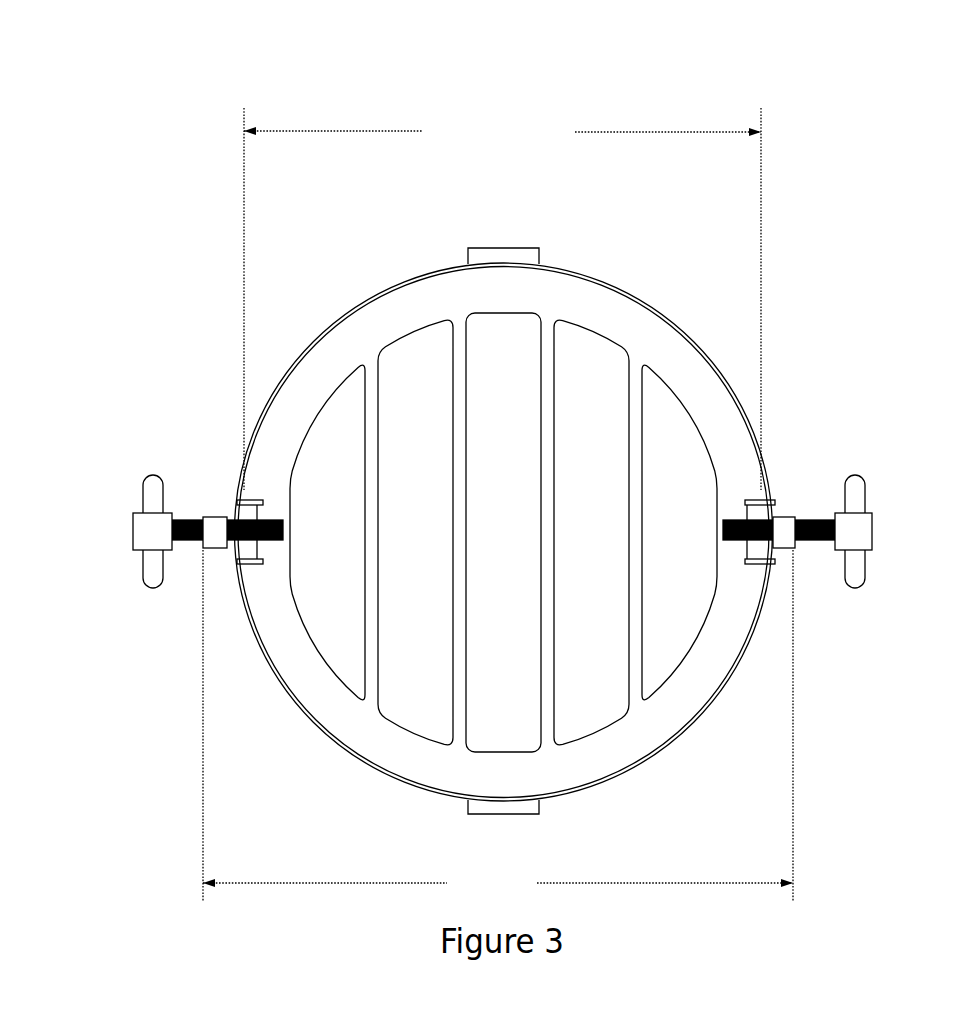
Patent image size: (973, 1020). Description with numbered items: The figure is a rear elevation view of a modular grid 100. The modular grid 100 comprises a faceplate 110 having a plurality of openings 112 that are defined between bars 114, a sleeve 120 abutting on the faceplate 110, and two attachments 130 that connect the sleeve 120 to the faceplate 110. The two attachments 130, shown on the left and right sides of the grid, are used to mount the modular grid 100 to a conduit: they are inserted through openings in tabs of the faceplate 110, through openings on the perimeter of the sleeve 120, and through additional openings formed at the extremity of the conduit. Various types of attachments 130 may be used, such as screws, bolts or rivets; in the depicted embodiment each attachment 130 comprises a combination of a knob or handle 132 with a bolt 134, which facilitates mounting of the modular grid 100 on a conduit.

The modular grid 100 is at (178, 128).
The faceplate 110 is at (608, 310).
The openings 112 is at (335, 473).
The bars 114 is at (460, 663).
The sleeve 120 is at (604, 786).
The attachments 130 is at (145, 538).
The knobs or handles 132 is at (848, 494).
The bolts 134 is at (822, 543).